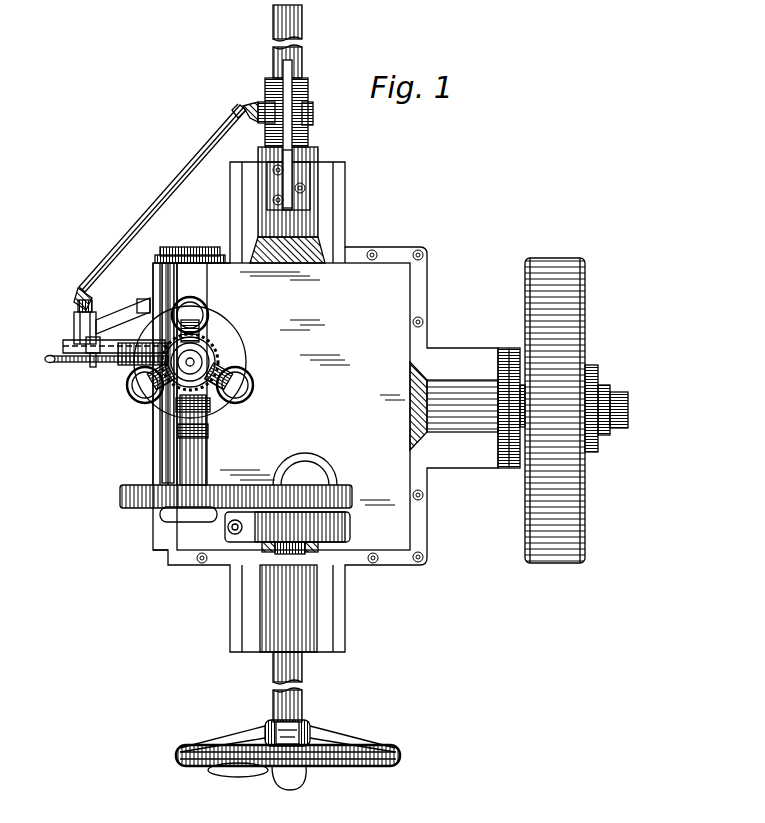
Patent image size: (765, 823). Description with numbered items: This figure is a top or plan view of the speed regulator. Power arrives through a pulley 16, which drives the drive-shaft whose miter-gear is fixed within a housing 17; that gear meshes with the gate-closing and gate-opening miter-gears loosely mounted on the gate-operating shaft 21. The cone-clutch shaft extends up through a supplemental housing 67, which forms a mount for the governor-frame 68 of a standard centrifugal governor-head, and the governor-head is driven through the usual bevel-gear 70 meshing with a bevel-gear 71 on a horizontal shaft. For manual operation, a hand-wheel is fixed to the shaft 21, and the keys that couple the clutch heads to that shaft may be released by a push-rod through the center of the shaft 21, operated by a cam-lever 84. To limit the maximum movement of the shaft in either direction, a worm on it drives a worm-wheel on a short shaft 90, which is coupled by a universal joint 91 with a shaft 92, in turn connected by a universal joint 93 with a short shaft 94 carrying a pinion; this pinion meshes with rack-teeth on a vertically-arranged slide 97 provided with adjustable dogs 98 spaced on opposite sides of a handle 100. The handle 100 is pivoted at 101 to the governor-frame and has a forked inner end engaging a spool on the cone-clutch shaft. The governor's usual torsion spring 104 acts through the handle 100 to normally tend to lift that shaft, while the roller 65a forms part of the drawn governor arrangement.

The pulley 16 is at (585, 498).
The housing 17 is at (398, 298).
The gate-operating shaft 21 is at (303, 45).
The roller 65a is at (236, 404).
The supplemental housing 67 is at (240, 350).
The governor-frame 68 is at (204, 428).
The bevel-gear 70 is at (222, 352).
The bevel-gear 71 is at (177, 357).
The cam-lever 84 is at (291, 775).
The short shaft 90 is at (258, 106).
The universal joint 91 is at (246, 110).
The shaft 92 is at (182, 186).
The universal joint 93 is at (75, 296).
The short shaft 94 is at (74, 318).
The slide 97 is at (88, 356).
The adjustable dog 98 is at (94, 367).
The handle 100 is at (53, 362).
The pivot 101 is at (178, 430).
The torsion spring 104 is at (178, 410).